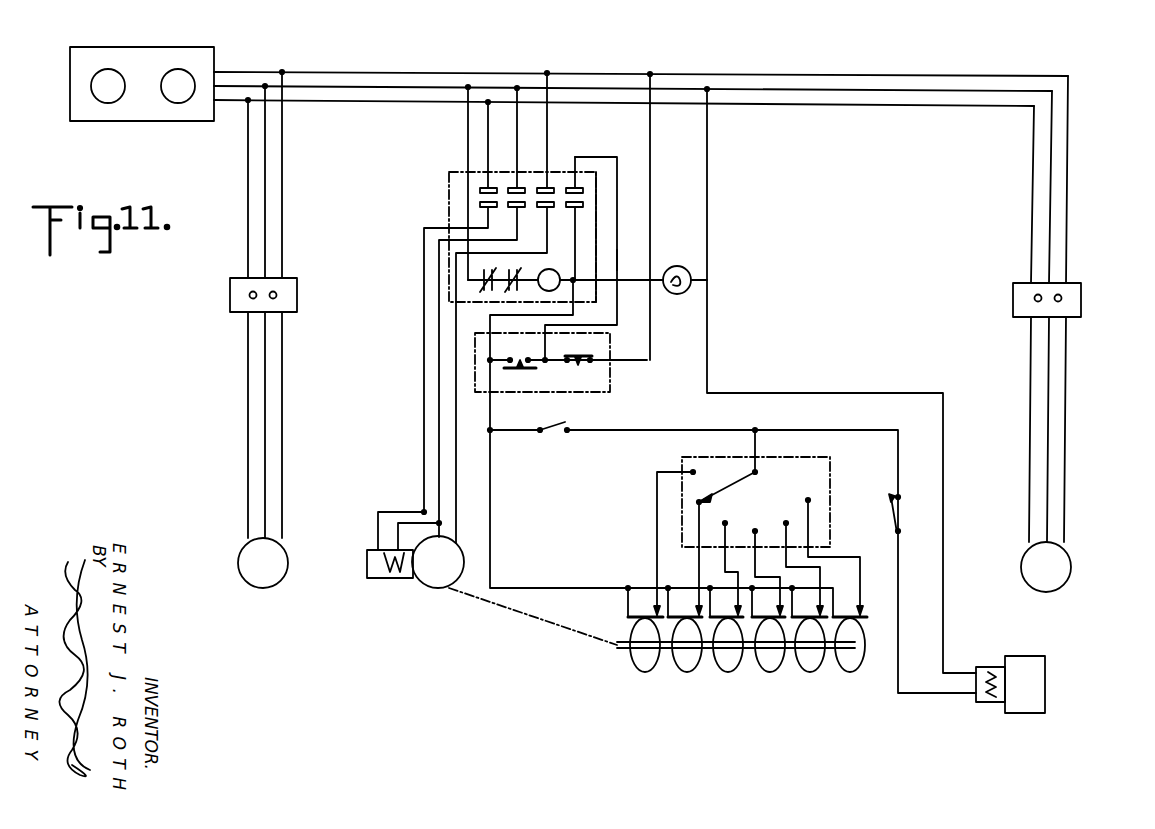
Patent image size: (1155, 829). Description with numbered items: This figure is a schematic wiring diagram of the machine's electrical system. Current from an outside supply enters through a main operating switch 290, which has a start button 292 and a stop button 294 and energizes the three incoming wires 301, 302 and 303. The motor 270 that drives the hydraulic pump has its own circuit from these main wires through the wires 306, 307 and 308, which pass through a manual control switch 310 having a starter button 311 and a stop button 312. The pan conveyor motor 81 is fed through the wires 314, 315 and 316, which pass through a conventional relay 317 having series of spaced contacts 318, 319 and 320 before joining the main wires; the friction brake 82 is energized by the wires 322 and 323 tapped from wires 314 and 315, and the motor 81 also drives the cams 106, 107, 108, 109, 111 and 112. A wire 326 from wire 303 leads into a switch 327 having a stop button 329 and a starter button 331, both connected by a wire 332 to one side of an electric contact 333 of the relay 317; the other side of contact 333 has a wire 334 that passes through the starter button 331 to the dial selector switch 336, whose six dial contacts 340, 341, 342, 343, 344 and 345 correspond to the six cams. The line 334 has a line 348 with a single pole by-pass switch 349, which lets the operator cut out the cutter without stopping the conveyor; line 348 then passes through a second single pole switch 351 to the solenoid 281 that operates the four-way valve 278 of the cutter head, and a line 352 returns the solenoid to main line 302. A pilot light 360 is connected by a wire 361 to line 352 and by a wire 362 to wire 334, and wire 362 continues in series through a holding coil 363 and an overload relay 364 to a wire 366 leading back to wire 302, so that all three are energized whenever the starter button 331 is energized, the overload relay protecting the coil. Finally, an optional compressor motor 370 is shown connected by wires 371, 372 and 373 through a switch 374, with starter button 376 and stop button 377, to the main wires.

The main operating switch 290 is at (134, 122).
The start button 292 is at (96, 86).
The stop button 294 is at (178, 69).
The incoming wire 301 is at (236, 101).
The incoming wire 302 is at (232, 86).
The incoming wire 303 is at (272, 72).
The wire 306 is at (248, 168).
The wire 307 is at (265, 200).
The wire 308 is at (283, 205).
The manual control switch 310 is at (232, 290).
The starter button 311 is at (250, 298).
The stop button 312 is at (275, 300).
The motor 270 is at (238, 562).
The wire 314 is at (487, 107).
The wire 315 is at (518, 122).
The wire 316 is at (548, 110).
The wire 366 is at (467, 140).
The spaced contacts 318 is at (480, 193).
The spaced contacts 319 is at (480, 205).
The spaced contacts 320 is at (575, 182).
The electric contact 333 is at (585, 198).
The relay 317 is at (608, 216).
The wire 326 is at (618, 232).
The wire 334 is at (580, 242).
The wire 332 is at (616, 262).
The line 352 is at (708, 204).
The wire 361 is at (692, 275).
The pilot light 360 is at (690, 287).
The wire 362 is at (630, 284).
The holding coil 363 is at (560, 284).
The overload relay 364 is at (478, 290).
The switch 327 is at (614, 386).
The stop button 329 is at (588, 219).
The starter button 331 is at (512, 351).
The line 348 is at (518, 430).
The single pole by-pass switch 349 is at (567, 432).
The single pole switch 351 is at (899, 517).
The dial selector switch 336 is at (727, 478).
The dial contact 340 is at (695, 460).
The dial contact 341 is at (697, 503).
The dial contact 342 is at (723, 524).
The dial contact 343 is at (757, 528).
The dial contact 344 is at (787, 520).
The dial contact 345 is at (810, 500).
The cam 106 is at (640, 673).
The cam 107 is at (684, 673).
The cam 108 is at (725, 673).
The cam 109 is at (766, 673).
The cam 111 is at (808, 673).
The cam 112 is at (850, 673).
The wire 322 is at (404, 512).
The wire 323 is at (398, 525).
The friction brake 82 is at (367, 568).
The pan conveyor motor 81 is at (438, 590).
The wire 371 is at (1032, 190).
The wire 372 is at (1052, 180).
The wire 373 is at (1067, 212).
The switch 374 is at (1082, 300).
The starter button 376 is at (1033, 298).
The stop button 377 is at (1062, 292).
The compressor motor 370 is at (1072, 564).
The solenoid 281 is at (990, 704).
The four-way valve 278 is at (1035, 712).